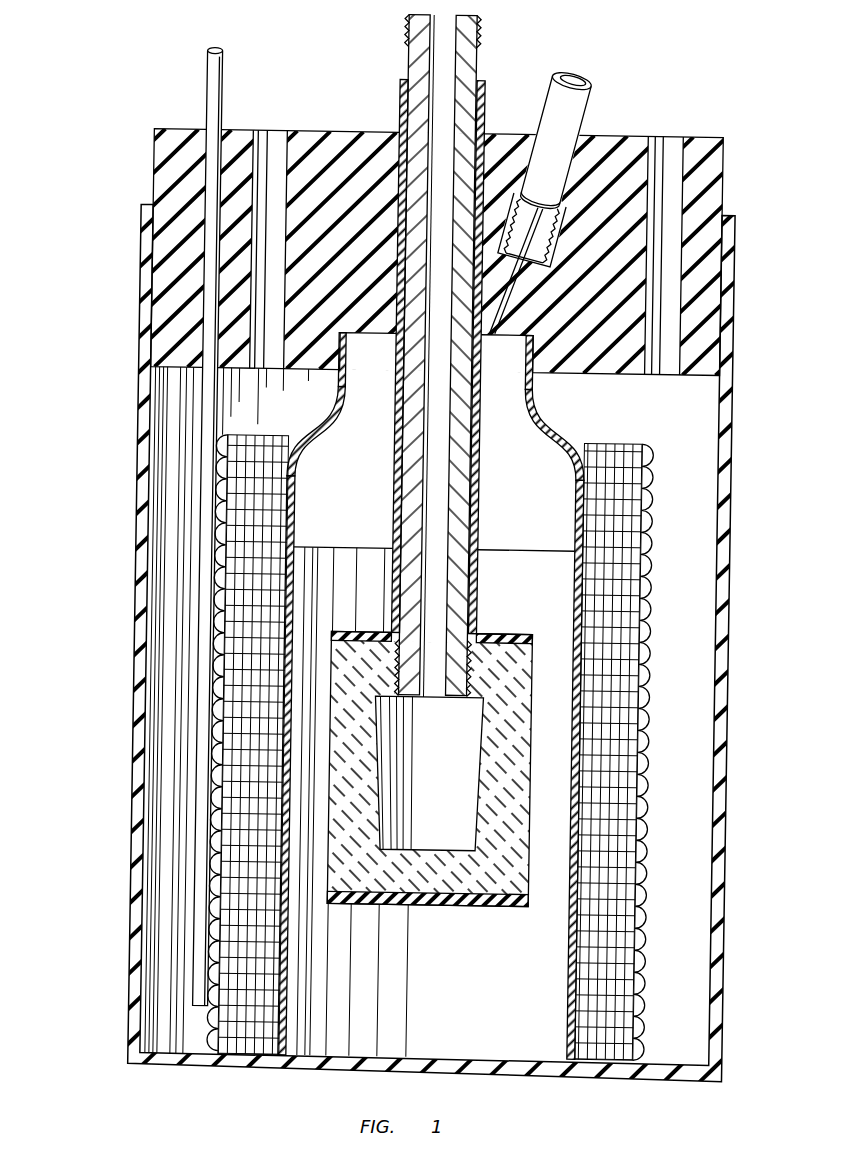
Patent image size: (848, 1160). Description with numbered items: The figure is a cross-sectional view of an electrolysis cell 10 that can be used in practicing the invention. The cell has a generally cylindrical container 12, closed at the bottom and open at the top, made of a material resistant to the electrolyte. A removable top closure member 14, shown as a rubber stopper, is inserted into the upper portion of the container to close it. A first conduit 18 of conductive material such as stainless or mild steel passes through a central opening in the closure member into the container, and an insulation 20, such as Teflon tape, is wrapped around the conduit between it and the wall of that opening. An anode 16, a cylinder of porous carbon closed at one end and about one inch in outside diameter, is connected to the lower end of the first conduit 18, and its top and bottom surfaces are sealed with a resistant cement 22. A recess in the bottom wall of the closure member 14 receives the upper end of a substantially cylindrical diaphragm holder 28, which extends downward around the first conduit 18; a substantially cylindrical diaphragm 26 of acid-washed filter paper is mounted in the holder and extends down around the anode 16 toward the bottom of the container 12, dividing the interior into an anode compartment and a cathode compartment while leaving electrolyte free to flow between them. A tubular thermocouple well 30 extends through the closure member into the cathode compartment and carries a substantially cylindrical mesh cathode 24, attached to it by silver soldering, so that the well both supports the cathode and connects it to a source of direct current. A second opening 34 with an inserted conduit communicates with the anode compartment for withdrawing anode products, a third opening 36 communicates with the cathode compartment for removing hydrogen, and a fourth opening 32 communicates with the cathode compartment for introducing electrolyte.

The electrolysis cell 10 is at (134, 271).
The container 12 is at (730, 570).
The top closure member 14 is at (717, 152).
The anode 16 is at (521, 780).
The first conduit 18 is at (472, 26).
The insulation 20 is at (391, 100).
The cement 22 is at (510, 633).
The cathode 24 is at (654, 552).
The diaphragm 26 is at (512, 549).
The diaphragm holder 28 is at (543, 410).
The thermocouple well 30 is at (215, 54).
The fourth opening 32 is at (656, 140).
The second opening 34 is at (593, 88).
The third opening 36 is at (262, 136).